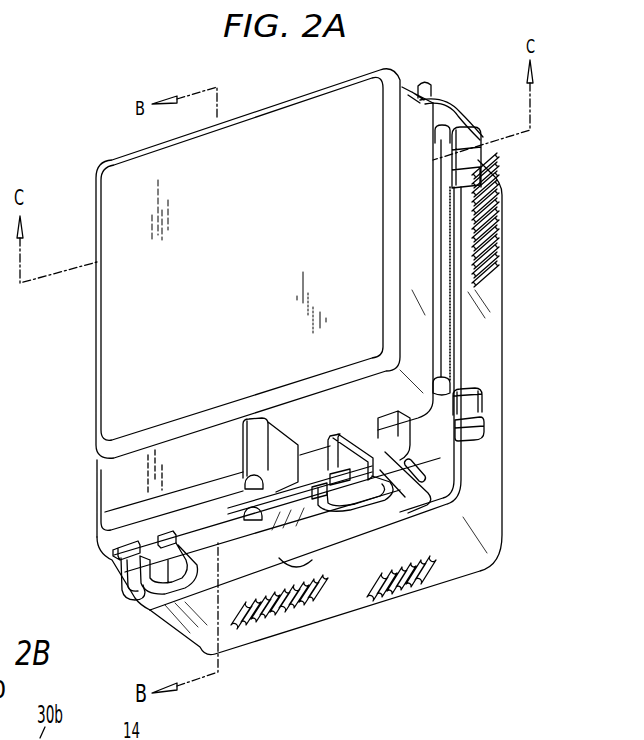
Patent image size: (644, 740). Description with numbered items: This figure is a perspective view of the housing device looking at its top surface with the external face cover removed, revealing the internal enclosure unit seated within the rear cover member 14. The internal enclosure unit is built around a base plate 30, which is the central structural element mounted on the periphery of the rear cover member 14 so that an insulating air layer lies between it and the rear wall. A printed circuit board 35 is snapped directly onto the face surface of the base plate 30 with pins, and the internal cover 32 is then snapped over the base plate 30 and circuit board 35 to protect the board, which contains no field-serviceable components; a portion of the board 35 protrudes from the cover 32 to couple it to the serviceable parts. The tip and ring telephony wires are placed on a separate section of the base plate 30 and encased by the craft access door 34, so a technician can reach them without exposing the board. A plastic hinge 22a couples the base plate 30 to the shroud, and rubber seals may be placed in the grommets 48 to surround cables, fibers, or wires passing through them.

The rear cover member 14 is at (503, 387).
The hinge 22a is at (478, 148).
The base plate 30 is at (440, 423).
The internal cover 32 is at (420, 253).
The craft access door 34 is at (118, 478).
The printed circuit board 35 is at (378, 434).
The grommets 48 is at (363, 513).